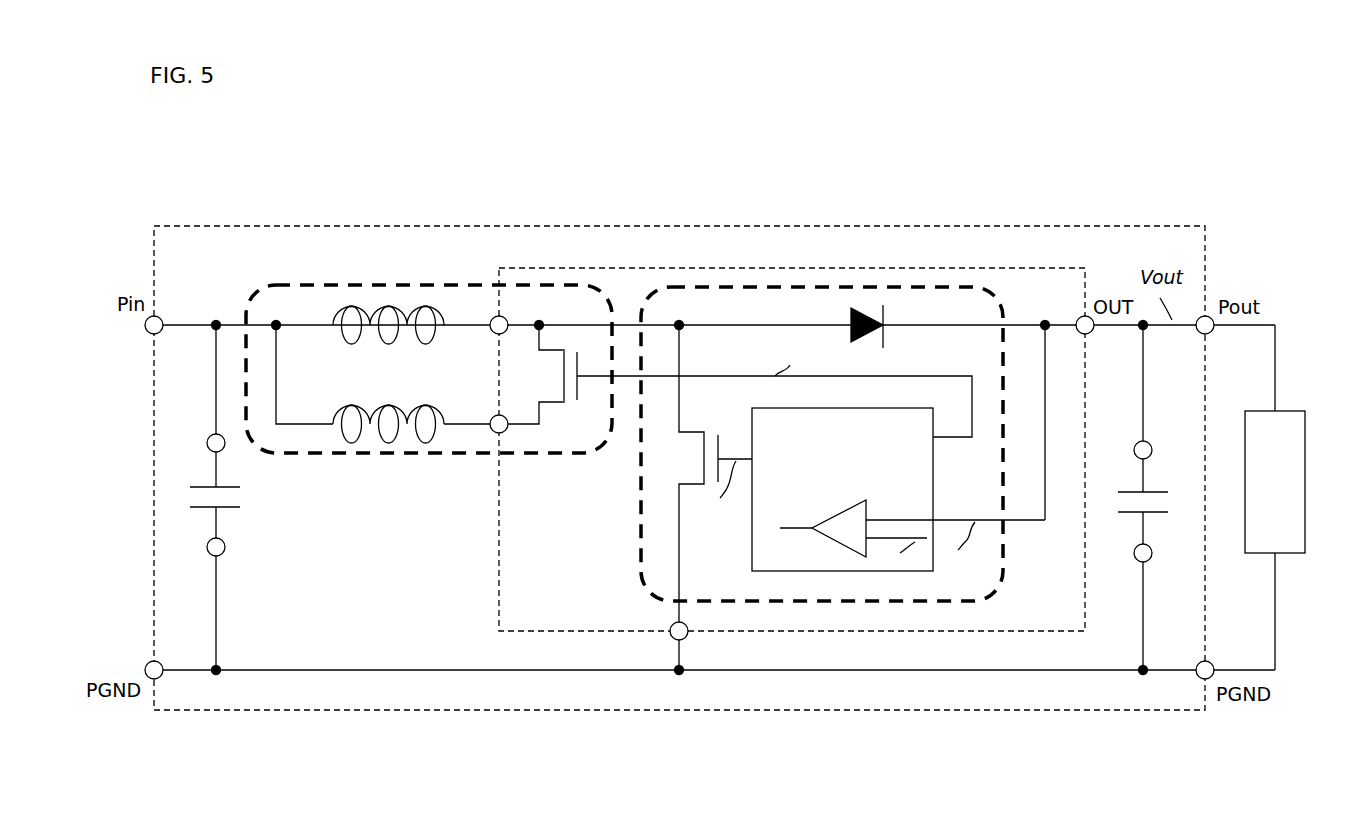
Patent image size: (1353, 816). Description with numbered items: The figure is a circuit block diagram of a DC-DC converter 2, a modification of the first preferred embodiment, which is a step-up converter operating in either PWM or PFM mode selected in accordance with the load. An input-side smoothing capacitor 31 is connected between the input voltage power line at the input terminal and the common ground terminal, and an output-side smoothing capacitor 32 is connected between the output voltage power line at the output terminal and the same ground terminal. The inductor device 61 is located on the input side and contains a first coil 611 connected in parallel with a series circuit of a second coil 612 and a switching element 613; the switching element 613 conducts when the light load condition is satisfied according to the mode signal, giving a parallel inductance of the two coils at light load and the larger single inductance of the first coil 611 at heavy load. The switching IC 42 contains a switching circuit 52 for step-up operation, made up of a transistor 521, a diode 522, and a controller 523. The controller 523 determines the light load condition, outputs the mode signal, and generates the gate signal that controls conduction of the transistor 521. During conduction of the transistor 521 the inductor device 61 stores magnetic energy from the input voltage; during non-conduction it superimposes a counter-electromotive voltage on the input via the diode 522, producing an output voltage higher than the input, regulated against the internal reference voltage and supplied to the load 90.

The DC-DC converter 2 is at (982, 226).
The switching IC 42 is at (499, 617).
The inductor device 61 is at (355, 286).
The first coil 611 is at (336, 325).
The second coil 612 is at (336, 424).
The switching element 613 is at (564, 390).
The switching circuit 52 is at (788, 287).
The transistor 521 is at (689, 432).
The diode 522 is at (886, 331).
The controller 523 is at (830, 408).
The input-side smoothing capacitor 31 is at (206, 508).
The output-side smoothing capacitor 32 is at (1134, 512).
The load 90 is at (1285, 411).